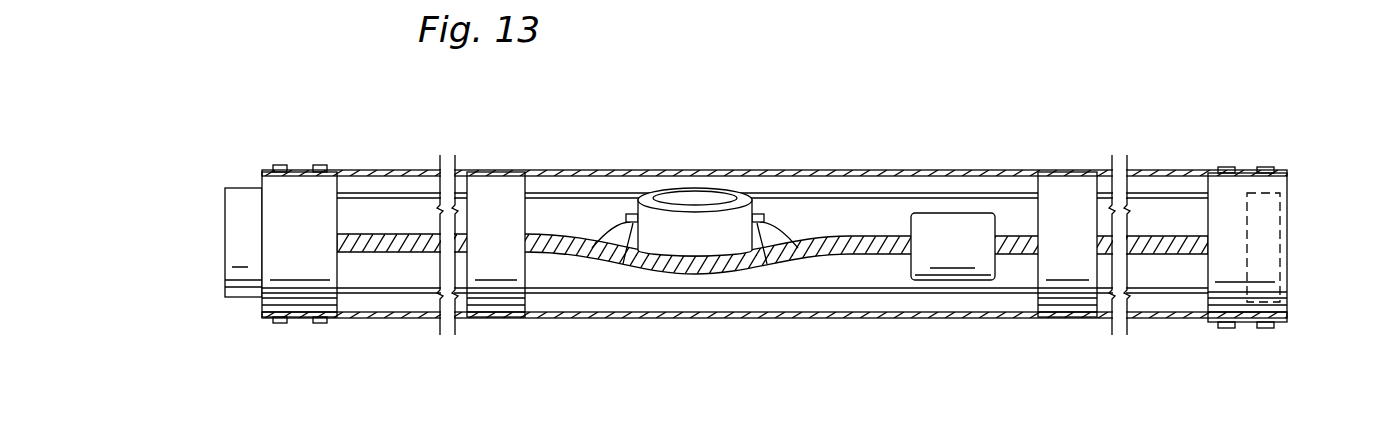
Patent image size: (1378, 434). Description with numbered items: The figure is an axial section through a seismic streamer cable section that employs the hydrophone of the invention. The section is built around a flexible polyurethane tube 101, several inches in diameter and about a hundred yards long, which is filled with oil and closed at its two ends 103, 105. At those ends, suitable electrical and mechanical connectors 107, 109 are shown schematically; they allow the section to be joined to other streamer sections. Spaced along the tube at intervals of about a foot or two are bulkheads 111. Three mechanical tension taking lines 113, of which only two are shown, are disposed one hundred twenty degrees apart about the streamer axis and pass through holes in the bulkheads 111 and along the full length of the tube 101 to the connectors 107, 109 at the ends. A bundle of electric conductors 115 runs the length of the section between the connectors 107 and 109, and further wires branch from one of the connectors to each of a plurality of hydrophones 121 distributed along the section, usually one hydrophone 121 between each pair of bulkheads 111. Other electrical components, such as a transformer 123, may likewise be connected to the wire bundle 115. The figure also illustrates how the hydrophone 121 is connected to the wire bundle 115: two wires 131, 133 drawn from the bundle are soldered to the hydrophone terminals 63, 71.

The terminal 63 is at (628, 218).
The terminal 71 is at (768, 218).
The flexible polyurethane tube 101 is at (583, 170).
The end 103 is at (307, 231).
The end 105 is at (1237, 192).
The electrical and mechanical connector 107 is at (241, 188).
The electrical and mechanical connector 109 is at (1262, 235).
The bulkhead 111 is at (497, 185).
The mechanical tension taking line 113 is at (1167, 197).
The bundle of electric conductors 115 is at (880, 236).
The hydrophone 121 is at (703, 208).
The transformer 123 is at (962, 218).
The wire 131 is at (622, 258).
The wire 133 is at (789, 252).